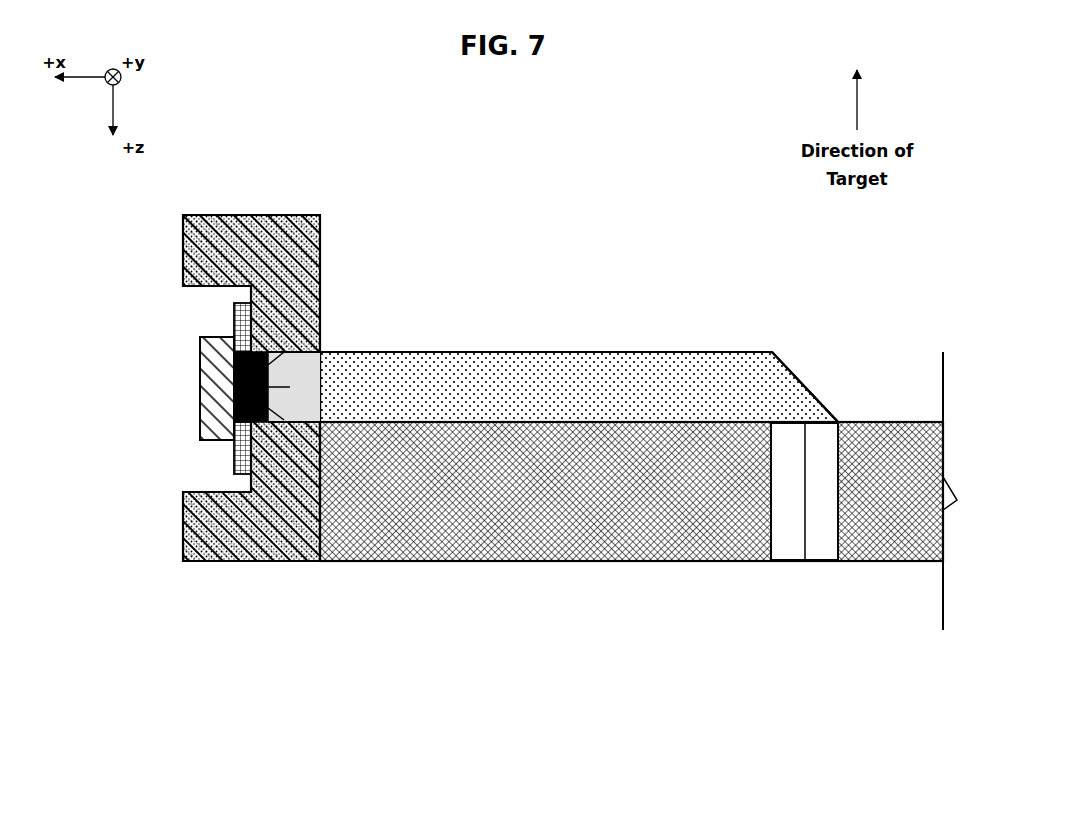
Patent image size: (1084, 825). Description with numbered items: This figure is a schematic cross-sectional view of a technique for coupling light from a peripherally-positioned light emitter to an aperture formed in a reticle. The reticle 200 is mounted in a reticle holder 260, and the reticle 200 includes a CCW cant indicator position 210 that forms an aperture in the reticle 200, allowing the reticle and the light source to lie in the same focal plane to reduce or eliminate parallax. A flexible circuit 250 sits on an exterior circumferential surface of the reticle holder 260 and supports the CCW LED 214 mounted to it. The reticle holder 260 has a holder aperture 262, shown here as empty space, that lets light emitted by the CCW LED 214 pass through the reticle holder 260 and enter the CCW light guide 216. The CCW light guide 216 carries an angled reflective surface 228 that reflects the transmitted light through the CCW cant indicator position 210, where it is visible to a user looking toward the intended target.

The reticle 200 is at (545, 543).
The CCW cant indicator position 210 is at (787, 547).
The CCW LED 214 is at (200, 385).
The CCW light guide 216 is at (562, 370).
The reflective surface 228 is at (808, 380).
The flexible circuit 250 is at (122, 490).
The reticle holder 260 is at (303, 543).
The holder aperture 262 is at (278, 390).